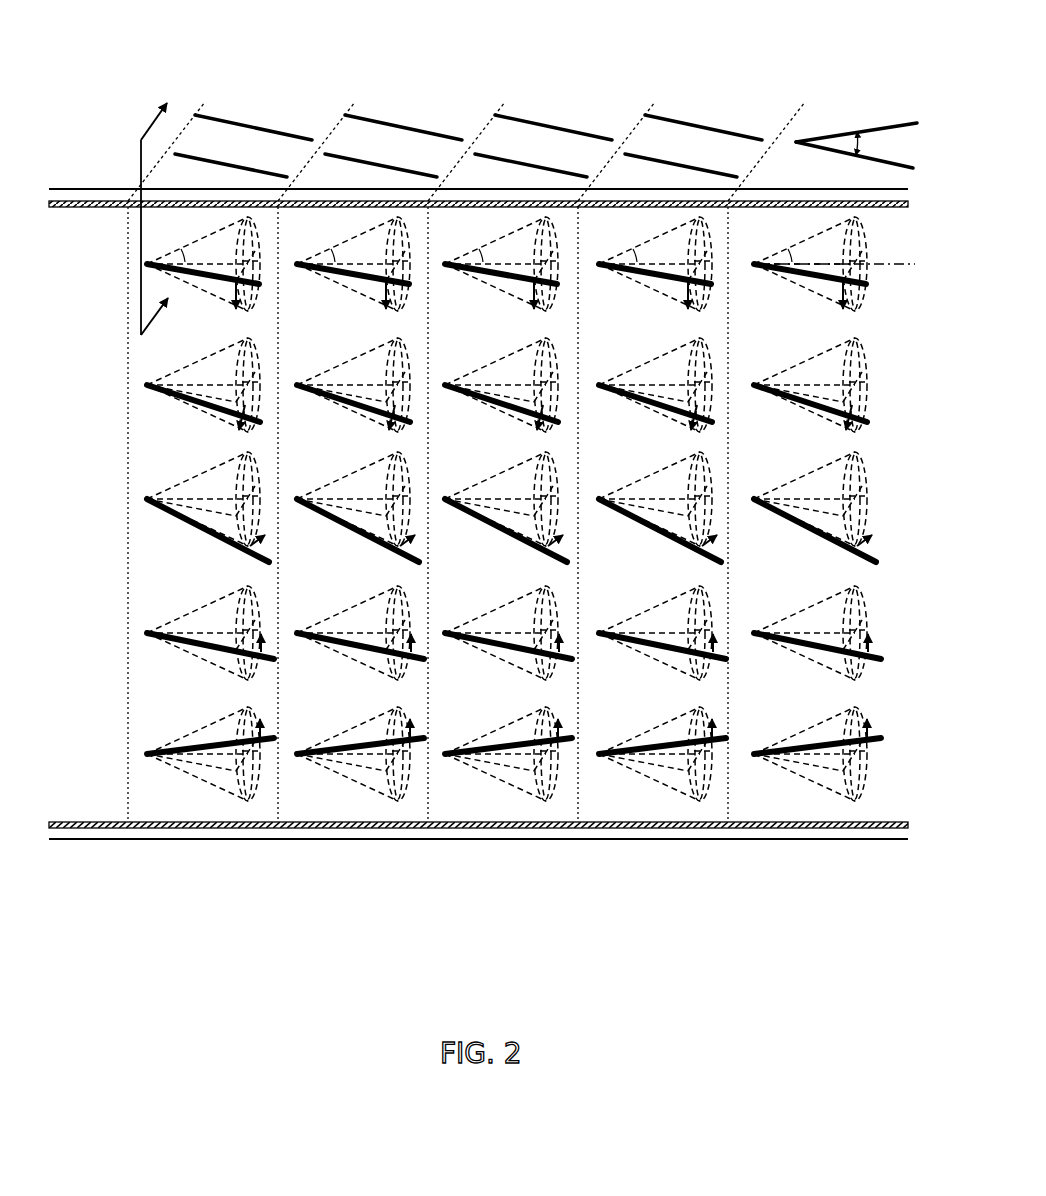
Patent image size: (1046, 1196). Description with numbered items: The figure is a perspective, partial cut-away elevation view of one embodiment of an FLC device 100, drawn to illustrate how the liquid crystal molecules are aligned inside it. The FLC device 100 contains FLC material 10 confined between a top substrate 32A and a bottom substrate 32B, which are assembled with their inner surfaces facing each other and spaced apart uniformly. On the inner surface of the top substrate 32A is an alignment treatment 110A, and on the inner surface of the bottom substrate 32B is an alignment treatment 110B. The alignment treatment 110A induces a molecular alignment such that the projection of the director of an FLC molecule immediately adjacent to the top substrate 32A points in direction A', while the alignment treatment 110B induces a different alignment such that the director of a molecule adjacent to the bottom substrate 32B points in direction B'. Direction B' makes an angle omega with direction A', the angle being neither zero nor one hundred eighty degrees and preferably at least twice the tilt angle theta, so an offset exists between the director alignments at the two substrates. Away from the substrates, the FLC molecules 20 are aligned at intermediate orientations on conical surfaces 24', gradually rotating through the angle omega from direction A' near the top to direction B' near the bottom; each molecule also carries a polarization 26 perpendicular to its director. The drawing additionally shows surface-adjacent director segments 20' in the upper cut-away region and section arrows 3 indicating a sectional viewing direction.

The FLC device 100 is at (558, 72).
The FLC material 10 is at (150, 544).
The FLC molecules 20 is at (811, 517).
The surface liquid crystal molecule director 20' is at (522, 122).
The conical surfaces 24' is at (800, 514).
The polarization 26 is at (842, 298).
The top substrate 32A is at (117, 188).
The bottom substrate 32B is at (515, 840).
The alignment treatment 110A is at (103, 207).
The alignment treatment 110B is at (100, 822).
The section line of FIG. 3 is at (162, 209).